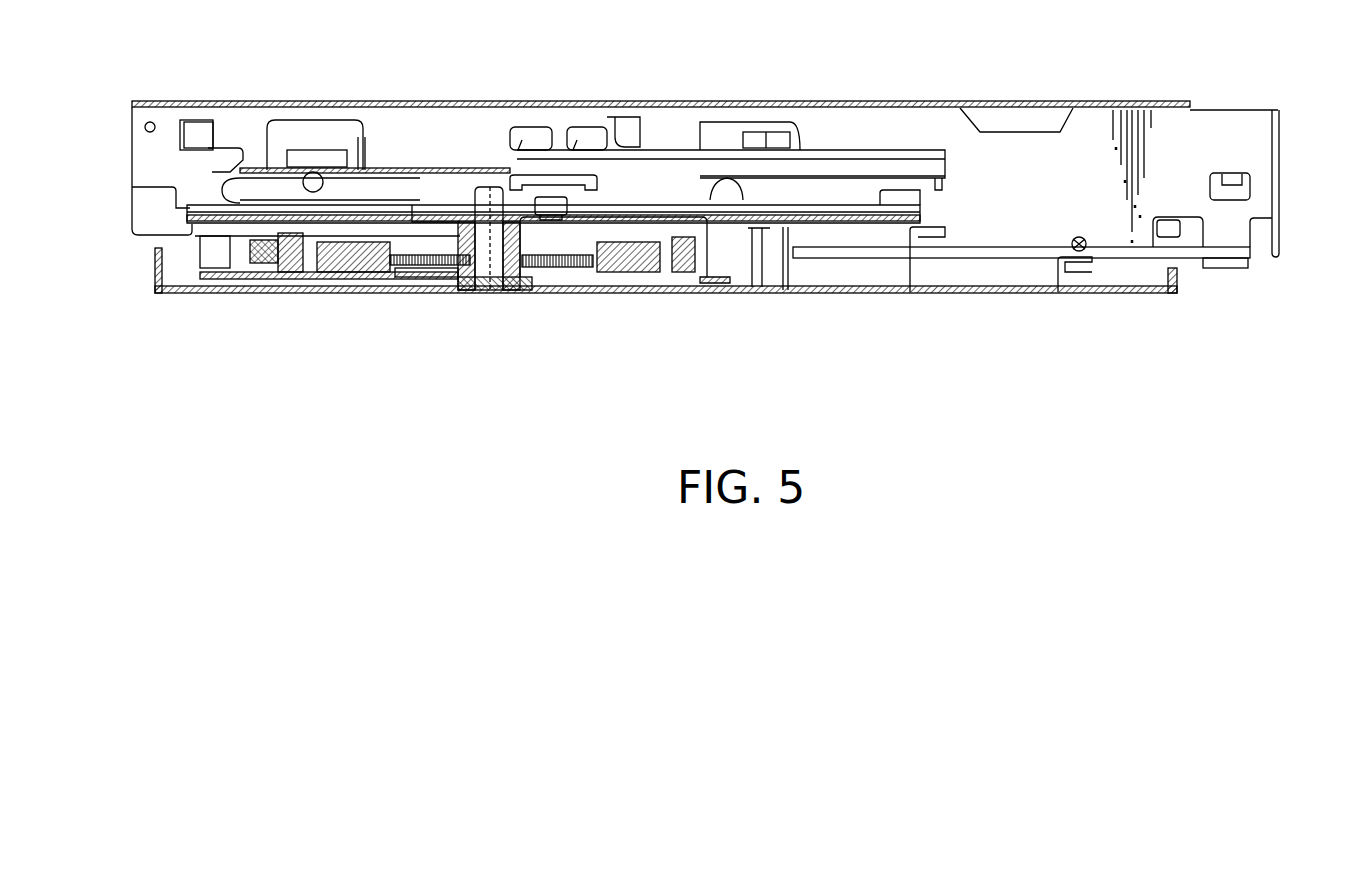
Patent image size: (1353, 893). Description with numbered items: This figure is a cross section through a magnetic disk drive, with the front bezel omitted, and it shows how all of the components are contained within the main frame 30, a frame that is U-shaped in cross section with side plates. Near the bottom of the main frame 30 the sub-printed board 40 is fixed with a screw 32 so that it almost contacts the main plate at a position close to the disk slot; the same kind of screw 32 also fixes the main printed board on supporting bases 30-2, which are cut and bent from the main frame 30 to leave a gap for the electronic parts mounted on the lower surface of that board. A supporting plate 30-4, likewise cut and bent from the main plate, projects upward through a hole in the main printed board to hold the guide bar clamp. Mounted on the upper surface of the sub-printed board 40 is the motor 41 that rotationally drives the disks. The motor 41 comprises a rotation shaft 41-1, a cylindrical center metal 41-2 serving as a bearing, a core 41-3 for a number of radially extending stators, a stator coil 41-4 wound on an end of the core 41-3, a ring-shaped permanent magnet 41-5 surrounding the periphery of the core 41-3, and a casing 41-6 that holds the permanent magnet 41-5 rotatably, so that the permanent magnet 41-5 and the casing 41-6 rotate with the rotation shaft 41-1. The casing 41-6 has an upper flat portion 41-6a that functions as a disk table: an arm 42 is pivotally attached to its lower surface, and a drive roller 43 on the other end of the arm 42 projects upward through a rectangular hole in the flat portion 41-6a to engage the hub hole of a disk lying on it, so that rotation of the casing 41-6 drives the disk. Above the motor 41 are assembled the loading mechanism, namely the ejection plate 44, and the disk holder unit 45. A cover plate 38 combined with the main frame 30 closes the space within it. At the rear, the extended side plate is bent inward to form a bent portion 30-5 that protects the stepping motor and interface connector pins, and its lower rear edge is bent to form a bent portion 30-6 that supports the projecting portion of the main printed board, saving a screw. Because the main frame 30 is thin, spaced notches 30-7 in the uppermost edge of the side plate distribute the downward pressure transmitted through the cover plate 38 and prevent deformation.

The main frame 30 is at (626, 290).
The supporting base 30-2 is at (1060, 290).
The supporting plate 30-4 is at (928, 290).
The bent portion 30-5 is at (1280, 143).
The bent portion 30-6 is at (1225, 268).
The notch 30-7 is at (990, 130).
The screw 32 is at (1077, 240).
The cover plate 38 is at (1020, 108).
The sub-printed board 40 is at (712, 200).
The motor 41 is at (268, 278).
The rotation shaft 41-1 is at (500, 190).
The center metal 41-2 is at (460, 285).
The core 41-3 is at (328, 285).
The stator coil 41-4 is at (352, 230).
The permanent magnet 41-5 is at (283, 238).
The casing 41-6 is at (616, 215).
The upper flat portion 41-6a is at (428, 200).
The arm 42 is at (530, 285).
The drive roller 43 is at (560, 200).
The ejection plate 44 is at (784, 290).
The disk holder unit 45 is at (912, 130).